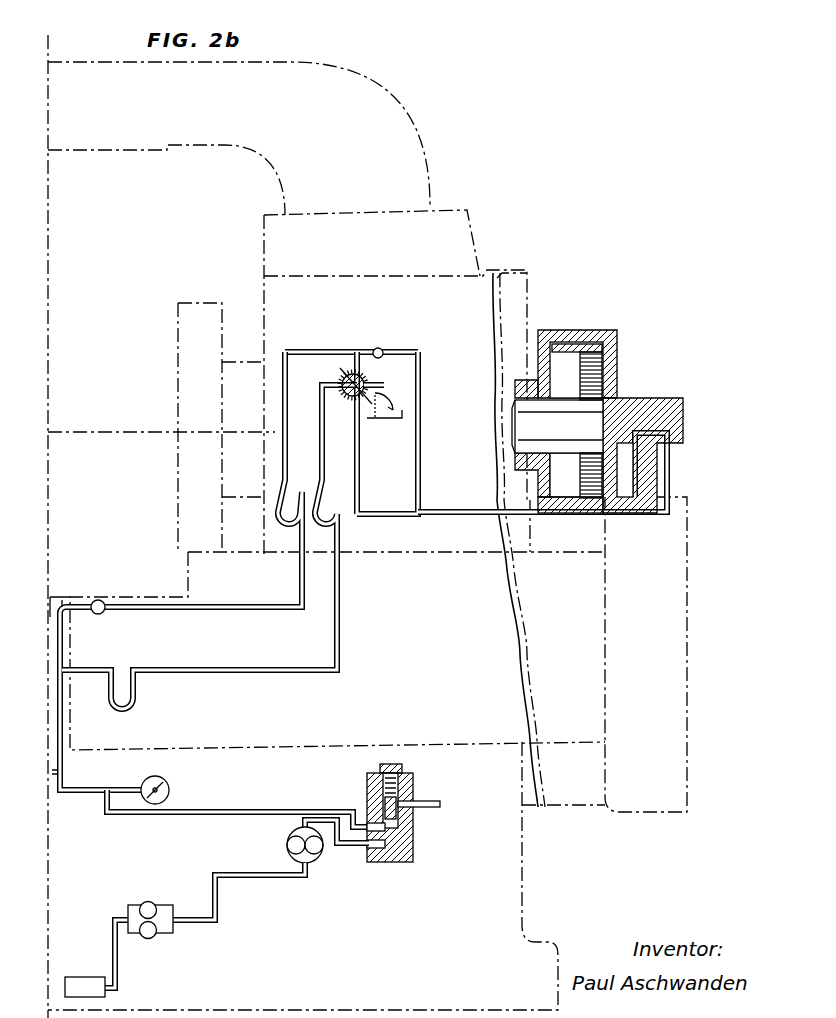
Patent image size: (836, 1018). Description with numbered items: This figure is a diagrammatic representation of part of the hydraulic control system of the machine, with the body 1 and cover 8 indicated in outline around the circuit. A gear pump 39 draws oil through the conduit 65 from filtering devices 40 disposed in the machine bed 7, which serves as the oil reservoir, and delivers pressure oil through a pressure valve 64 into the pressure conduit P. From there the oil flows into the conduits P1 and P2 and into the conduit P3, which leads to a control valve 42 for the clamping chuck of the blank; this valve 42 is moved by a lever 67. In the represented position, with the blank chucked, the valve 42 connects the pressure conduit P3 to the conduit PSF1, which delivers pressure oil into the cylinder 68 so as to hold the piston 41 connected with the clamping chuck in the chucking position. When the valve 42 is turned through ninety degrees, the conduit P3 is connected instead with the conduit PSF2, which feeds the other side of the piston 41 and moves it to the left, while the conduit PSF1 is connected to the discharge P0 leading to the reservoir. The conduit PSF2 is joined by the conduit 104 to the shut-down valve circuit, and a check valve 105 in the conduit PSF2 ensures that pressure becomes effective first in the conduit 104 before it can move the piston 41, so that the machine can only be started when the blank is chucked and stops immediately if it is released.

The housing 1 is at (460, 282).
The machine bed 7 is at (518, 907).
The cover 8 is at (324, 87).
The gear pump 39 is at (290, 845).
The filtering devices 40 is at (140, 913).
The piston 41 is at (593, 366).
The control valve 42 is at (340, 382).
The pressure valve 64 is at (373, 800).
The conduit 65 is at (251, 878).
The lever 67 is at (387, 420).
The cylinder 68 is at (560, 362).
The conduit 104 is at (240, 609).
The check valve 105 is at (388, 341).
The pressure conduit P is at (203, 811).
The discharge P0 is at (386, 372).
The conduit P1 is at (53, 777).
The conduit P2 is at (60, 722).
The conduit P3 is at (253, 669).
The conduit PSF1 is at (358, 480).
The conduit PSF2 is at (401, 352).